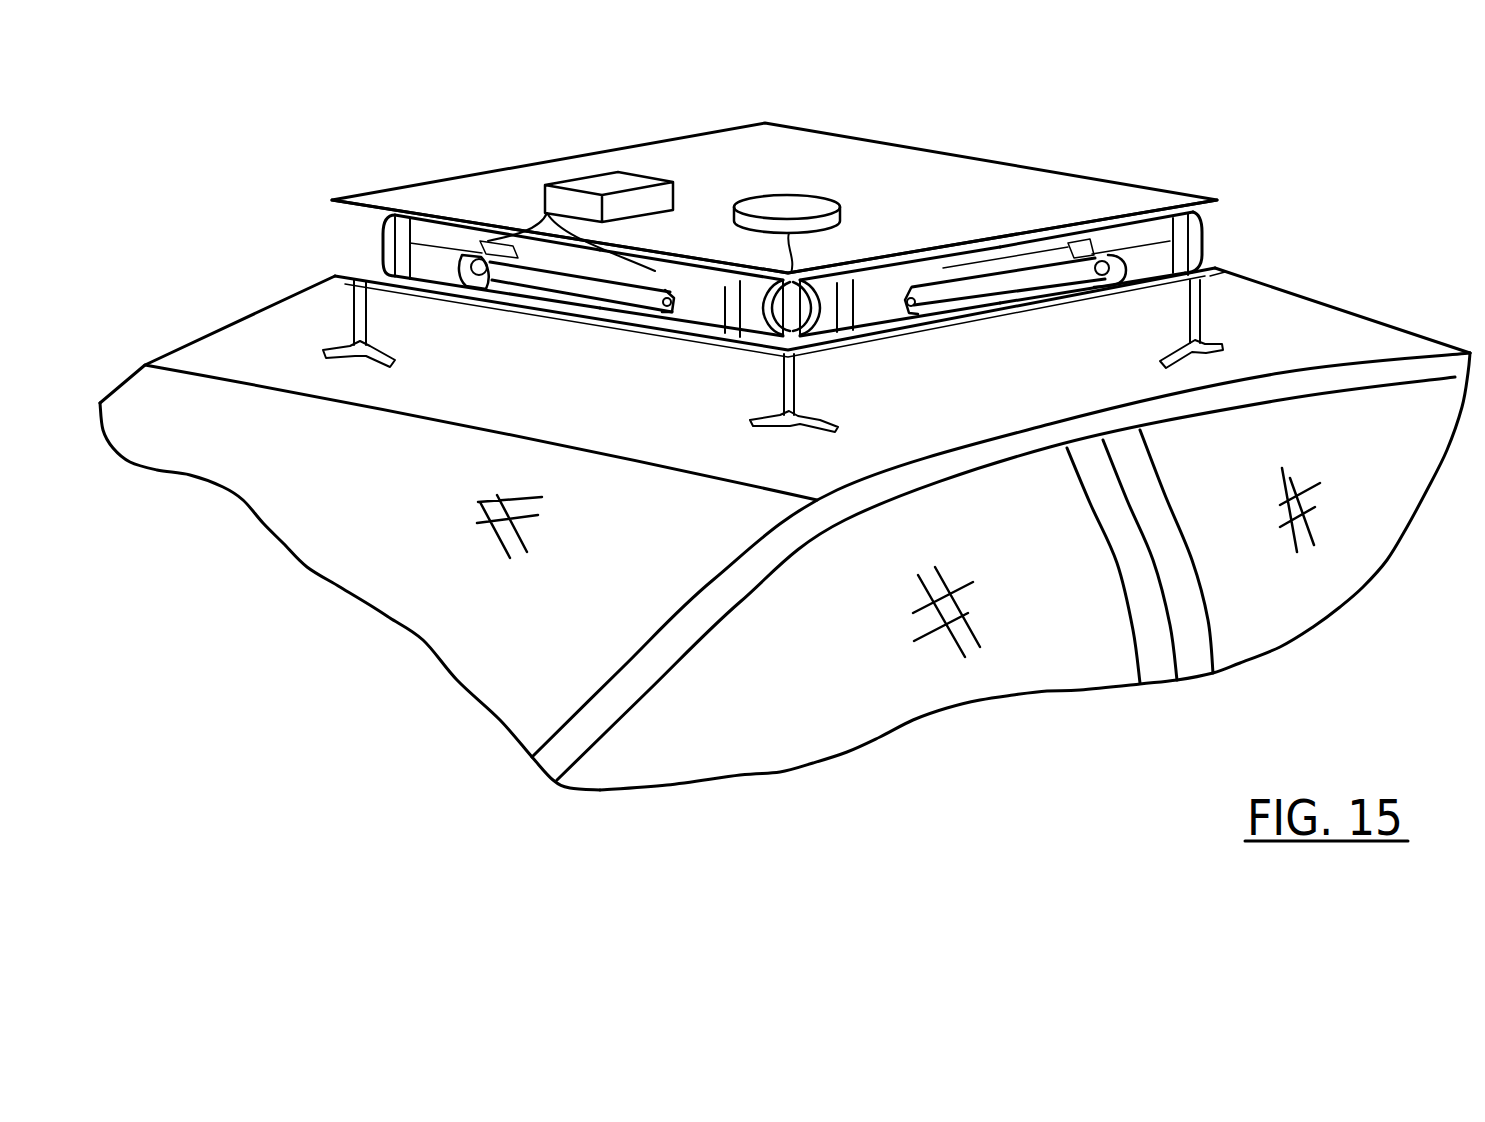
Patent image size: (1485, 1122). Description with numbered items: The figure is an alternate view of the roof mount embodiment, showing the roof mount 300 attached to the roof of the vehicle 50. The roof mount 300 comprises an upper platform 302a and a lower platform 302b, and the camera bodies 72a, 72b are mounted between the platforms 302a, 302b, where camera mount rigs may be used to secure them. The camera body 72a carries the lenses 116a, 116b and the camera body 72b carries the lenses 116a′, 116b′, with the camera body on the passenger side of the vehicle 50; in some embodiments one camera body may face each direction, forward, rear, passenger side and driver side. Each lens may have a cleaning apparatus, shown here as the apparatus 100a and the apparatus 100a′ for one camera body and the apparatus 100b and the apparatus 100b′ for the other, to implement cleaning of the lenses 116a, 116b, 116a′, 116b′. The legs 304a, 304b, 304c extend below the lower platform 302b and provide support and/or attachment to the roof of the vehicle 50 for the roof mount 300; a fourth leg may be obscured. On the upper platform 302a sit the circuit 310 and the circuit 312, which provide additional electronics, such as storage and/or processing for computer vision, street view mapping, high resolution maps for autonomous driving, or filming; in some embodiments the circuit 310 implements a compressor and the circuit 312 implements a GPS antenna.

The vehicle 50 is at (1347, 325).
The camera body 72a is at (585, 287).
The camera body 72b is at (1010, 283).
The apparatus 100a is at (385, 225).
The apparatus 100a′ is at (707, 312).
The apparatus 100b is at (872, 283).
The apparatus 100b′ is at (1110, 240).
The lens 116a is at (483, 281).
The lens 116b is at (663, 290).
The lens 116a′ is at (912, 296).
The lens 116b′ is at (1110, 278).
The roof mount 300 is at (953, 154).
The platform 302a is at (588, 156).
The platform 302b is at (337, 273).
The leg 304a is at (350, 315).
The leg 304b is at (803, 400).
The leg 304c is at (1205, 308).
The circuit 310 is at (678, 192).
The circuit 312 is at (798, 197).